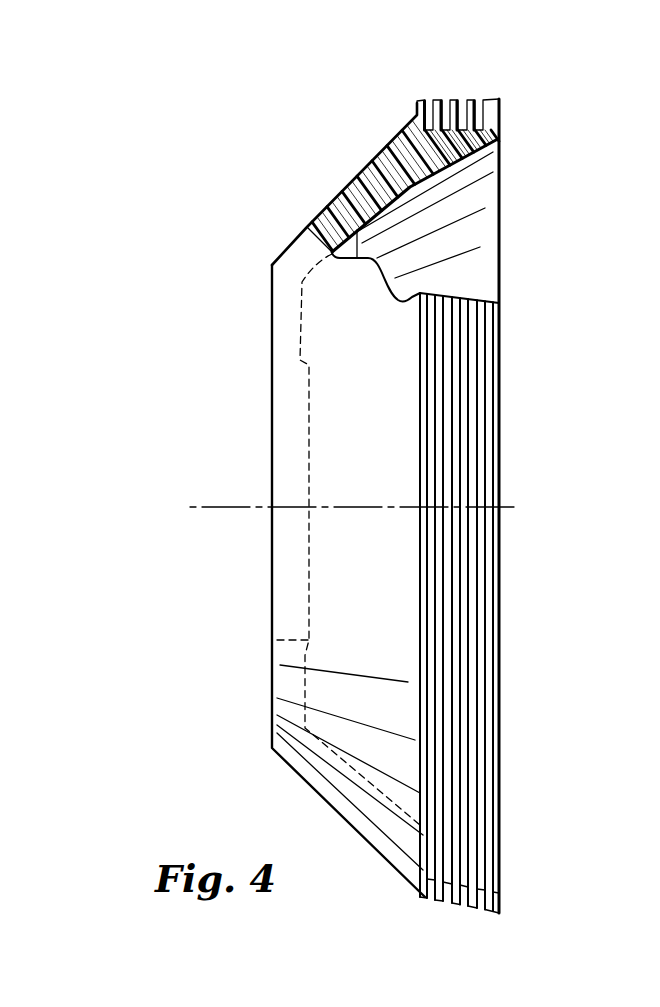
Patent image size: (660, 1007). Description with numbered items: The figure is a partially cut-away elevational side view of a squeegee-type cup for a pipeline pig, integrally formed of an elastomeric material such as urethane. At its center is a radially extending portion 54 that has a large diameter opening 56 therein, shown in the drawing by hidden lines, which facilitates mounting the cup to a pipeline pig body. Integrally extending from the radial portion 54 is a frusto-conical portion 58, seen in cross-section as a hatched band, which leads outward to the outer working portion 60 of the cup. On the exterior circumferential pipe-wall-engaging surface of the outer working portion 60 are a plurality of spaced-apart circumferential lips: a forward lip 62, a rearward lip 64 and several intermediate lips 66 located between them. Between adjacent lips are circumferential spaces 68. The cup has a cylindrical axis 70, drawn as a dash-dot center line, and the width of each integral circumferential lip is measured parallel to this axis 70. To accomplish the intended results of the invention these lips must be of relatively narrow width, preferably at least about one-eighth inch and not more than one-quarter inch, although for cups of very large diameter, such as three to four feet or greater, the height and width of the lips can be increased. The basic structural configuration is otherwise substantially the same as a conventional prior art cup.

The central radial extending portion 54 is at (283, 304).
The large diameter opening 56 is at (298, 638).
The frusto-conical portion 58 is at (362, 182).
The outer working portion 60 is at (455, 150).
The forward lip 62 is at (413, 113).
The rearward lip 64 is at (501, 104).
The intermediate lips 66 is at (460, 105).
The circumferential spaces 68 is at (471, 105).
The cup cylindrical axis 70 is at (213, 507).